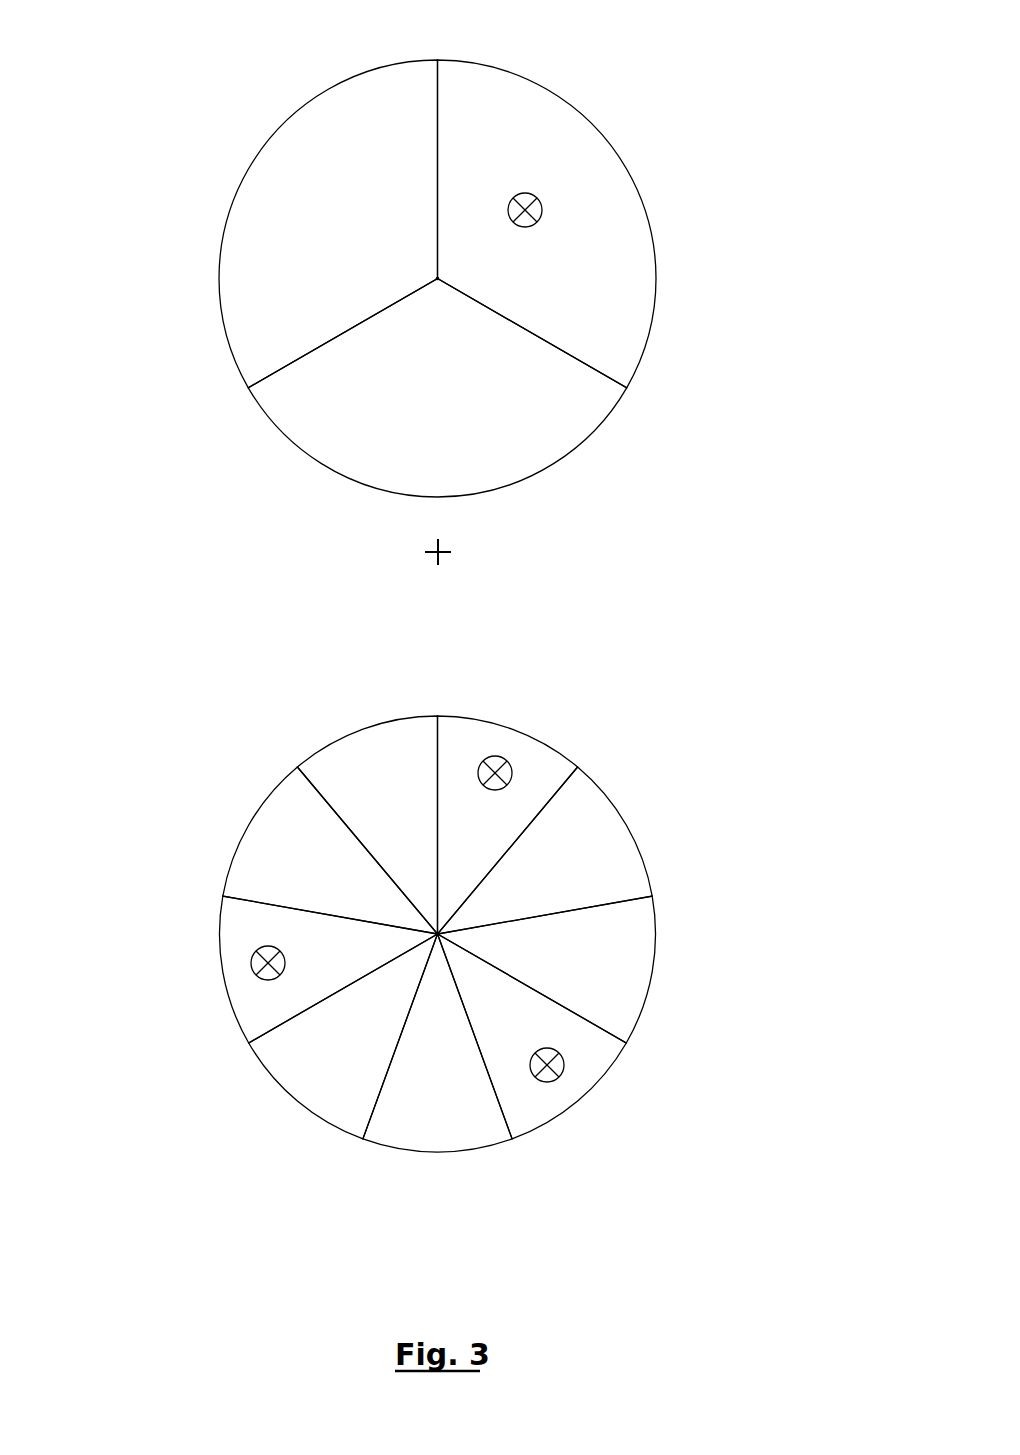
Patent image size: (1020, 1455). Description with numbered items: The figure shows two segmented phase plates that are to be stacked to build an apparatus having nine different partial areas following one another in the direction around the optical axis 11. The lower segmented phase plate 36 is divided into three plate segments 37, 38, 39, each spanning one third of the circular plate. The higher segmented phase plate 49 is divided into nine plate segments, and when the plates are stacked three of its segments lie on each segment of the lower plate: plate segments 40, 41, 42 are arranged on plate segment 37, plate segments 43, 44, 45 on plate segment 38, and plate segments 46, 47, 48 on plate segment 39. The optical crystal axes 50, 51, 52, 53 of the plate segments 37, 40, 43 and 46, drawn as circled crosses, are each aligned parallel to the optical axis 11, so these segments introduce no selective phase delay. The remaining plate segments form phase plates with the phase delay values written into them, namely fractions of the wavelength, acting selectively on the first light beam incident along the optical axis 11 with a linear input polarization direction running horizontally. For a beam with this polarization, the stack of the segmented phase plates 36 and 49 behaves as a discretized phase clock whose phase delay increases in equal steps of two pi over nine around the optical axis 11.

The optical axis 11 is at (438, 278).
The segmented phase plate 36 is at (437, 276).
The plate segment 37 is at (662, 187).
The plate segment 38 is at (584, 475).
The plate segment 39 is at (215, 187).
The plate segment 40 is at (526, 703).
The plate segment 41 is at (654, 812).
The plate segment 42 is at (683, 981).
The plate segment 43 is at (600, 1119).
The plate segment 44 is at (437, 1178).
The plate segment 45 is at (288, 1127).
The plate segment 46 is at (197, 970).
The plate segment 47 is at (229, 812).
The plate segment 48 is at (352, 705).
The higher segmented phase plate 49 is at (438, 936).
The optical crystal axis 50 is at (530, 190).
The optical crystal axis 51 is at (488, 755).
The optical crystal axis 52 is at (545, 1083).
The optical crystal axis 53 is at (255, 978).